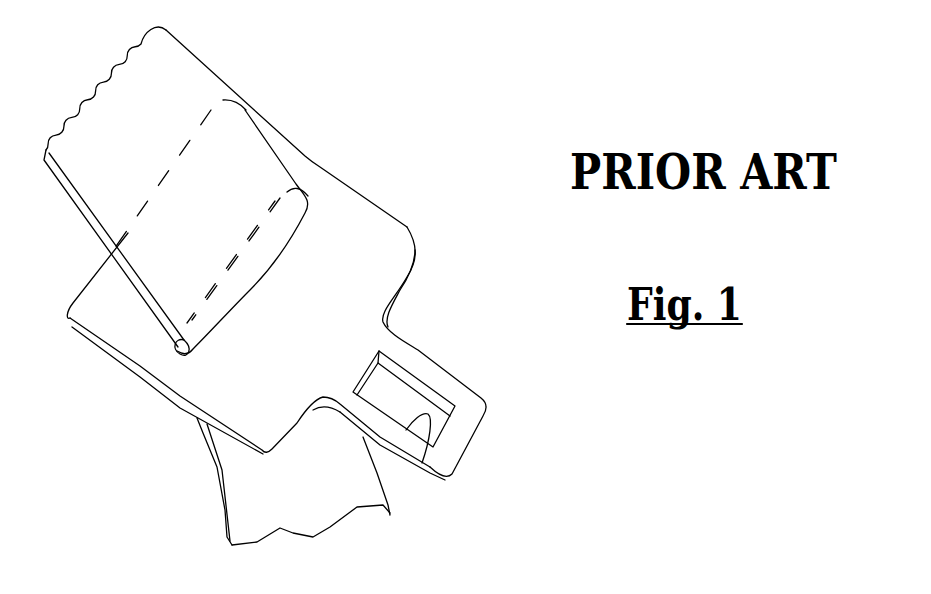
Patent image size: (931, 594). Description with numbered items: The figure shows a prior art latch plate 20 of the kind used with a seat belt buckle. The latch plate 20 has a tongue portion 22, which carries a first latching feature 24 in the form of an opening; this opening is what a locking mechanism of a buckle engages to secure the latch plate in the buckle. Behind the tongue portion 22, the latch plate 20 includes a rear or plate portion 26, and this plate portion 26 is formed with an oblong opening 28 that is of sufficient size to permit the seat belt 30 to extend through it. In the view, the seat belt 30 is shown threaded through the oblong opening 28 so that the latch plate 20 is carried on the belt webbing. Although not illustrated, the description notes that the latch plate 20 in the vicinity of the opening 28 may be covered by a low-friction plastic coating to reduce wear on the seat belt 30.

The latch plate 20 is at (407, 228).
The tongue portion 22 is at (417, 365).
The first latching feature 24 is at (422, 463).
The rear or plate portion 26 is at (258, 280).
The oblong opening 28 is at (355, 233).
The seat belt 30 is at (177, 63).